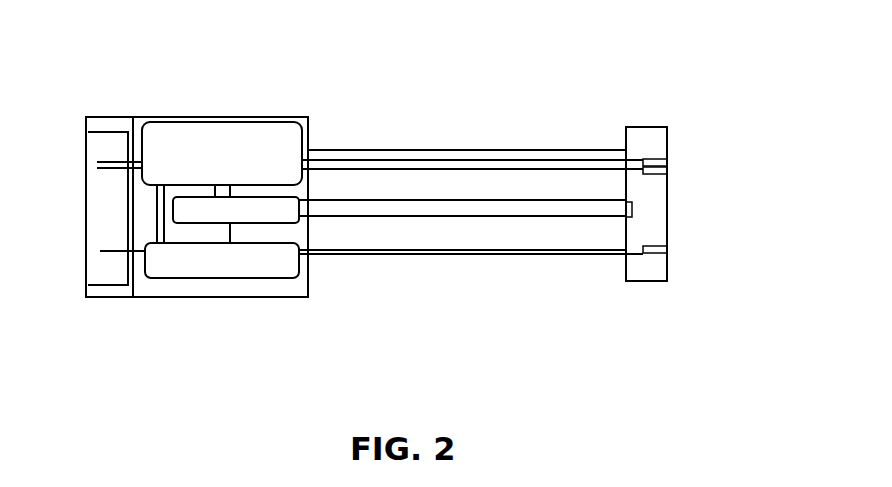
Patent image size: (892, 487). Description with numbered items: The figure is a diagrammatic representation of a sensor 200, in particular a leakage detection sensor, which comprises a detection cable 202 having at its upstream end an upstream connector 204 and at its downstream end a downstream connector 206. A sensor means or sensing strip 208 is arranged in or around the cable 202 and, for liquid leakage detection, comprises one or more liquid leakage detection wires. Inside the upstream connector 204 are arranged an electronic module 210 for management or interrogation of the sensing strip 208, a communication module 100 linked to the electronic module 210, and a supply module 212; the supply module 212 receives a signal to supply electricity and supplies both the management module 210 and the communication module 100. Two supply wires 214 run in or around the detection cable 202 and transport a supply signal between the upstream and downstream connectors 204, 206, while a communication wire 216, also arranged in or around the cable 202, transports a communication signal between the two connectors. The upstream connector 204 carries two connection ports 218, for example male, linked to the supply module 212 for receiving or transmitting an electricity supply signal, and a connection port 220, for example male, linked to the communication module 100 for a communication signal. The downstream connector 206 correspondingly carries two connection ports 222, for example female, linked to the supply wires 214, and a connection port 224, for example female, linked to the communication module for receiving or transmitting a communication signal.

The communication module 100 is at (197, 278).
The sensor 200 is at (335, 80).
The detection cable 202 is at (487, 150).
The upstream connector 204 is at (145, 117).
The downstream connector 206 is at (653, 127).
The sensing strip 208 is at (393, 200).
The electronic module 210 is at (258, 197).
The supply module 212 is at (183, 122).
The supply wires 214 is at (549, 159).
The communication wire 216 is at (418, 252).
The connection ports 218 is at (103, 178).
The connection port 220 is at (103, 252).
The connection ports 222 is at (672, 164).
The connection port 224 is at (667, 250).